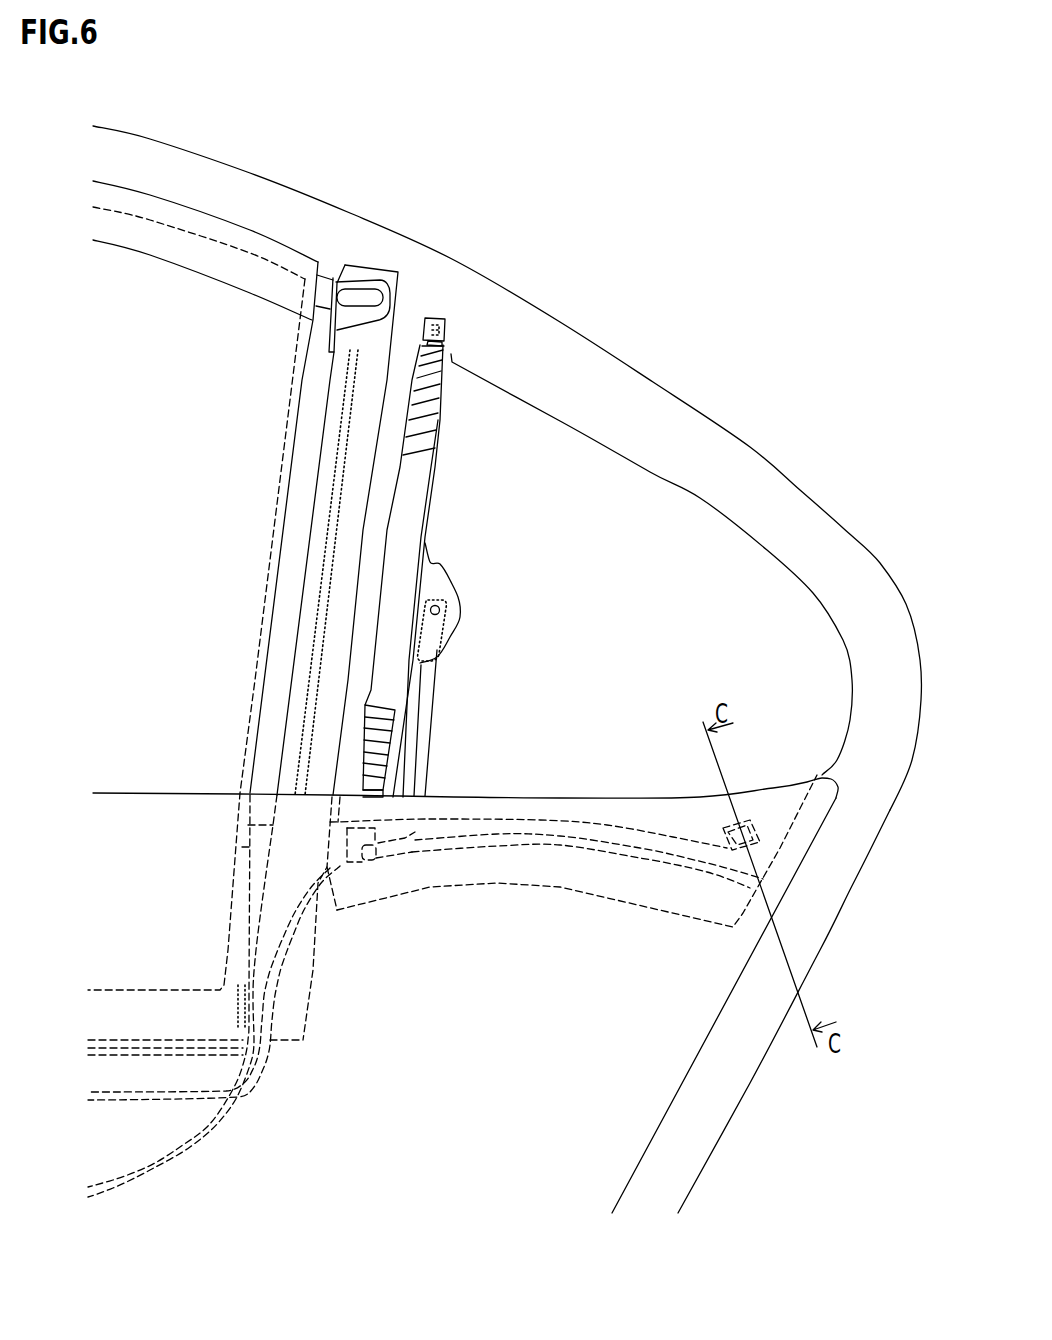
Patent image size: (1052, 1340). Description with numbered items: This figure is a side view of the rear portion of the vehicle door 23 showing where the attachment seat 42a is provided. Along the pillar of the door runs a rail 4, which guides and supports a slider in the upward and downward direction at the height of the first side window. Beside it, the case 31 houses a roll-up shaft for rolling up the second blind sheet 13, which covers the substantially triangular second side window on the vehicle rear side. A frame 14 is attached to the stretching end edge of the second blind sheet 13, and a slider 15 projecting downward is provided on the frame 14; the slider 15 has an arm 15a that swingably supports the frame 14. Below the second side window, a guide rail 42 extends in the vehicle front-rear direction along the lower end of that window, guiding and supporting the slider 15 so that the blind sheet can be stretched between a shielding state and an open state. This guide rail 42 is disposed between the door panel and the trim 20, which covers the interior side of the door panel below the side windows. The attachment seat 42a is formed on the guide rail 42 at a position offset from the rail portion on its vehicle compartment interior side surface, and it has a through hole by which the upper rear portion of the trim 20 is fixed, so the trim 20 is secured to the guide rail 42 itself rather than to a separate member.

The rail 4 is at (390, 337).
The second blind sheet 13 is at (418, 489).
The frame 14 is at (460, 612).
The slider 15 is at (391, 880).
The arm 15a is at (423, 717).
The trim 20 is at (648, 1093).
The vehicle door 23 is at (683, 372).
The case 31 is at (448, 348).
The rail 42 is at (543, 887).
The attachment seat 42a is at (752, 830).